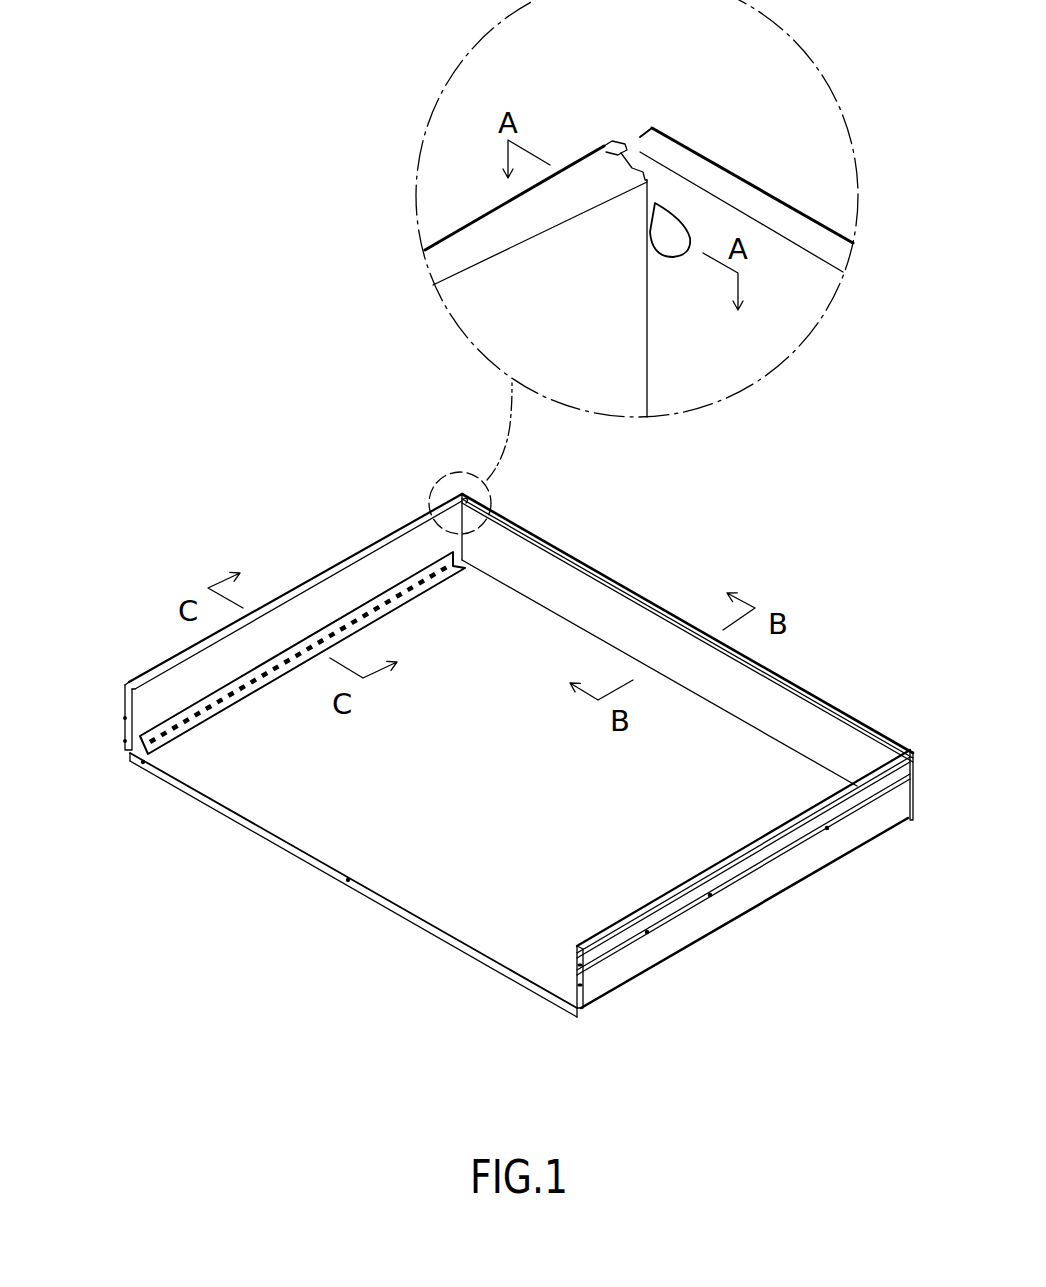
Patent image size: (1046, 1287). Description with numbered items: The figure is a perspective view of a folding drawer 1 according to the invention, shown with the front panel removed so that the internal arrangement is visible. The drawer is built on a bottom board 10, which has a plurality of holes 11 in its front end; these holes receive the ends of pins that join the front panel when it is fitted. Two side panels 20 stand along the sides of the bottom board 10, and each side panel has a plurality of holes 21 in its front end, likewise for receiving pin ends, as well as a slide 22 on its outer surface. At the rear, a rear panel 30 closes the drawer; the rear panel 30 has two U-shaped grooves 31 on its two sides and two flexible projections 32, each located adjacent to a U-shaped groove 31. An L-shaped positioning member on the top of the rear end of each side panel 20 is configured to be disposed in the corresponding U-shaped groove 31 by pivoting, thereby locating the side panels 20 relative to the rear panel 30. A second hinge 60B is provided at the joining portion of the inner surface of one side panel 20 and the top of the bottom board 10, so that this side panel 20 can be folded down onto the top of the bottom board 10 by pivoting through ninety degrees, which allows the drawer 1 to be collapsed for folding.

The folding drawer 1 is at (325, 430).
The bottom board 10 is at (297, 808).
The holes 11 is at (348, 882).
The side panels 20 is at (350, 570).
The holes 21 is at (127, 718).
The slide 22 is at (673, 915).
The rear panel 30 is at (633, 618).
The U-shaped groove 31 is at (622, 150).
The flexible projection 32 is at (662, 226).
The second hinge 60B is at (180, 725).